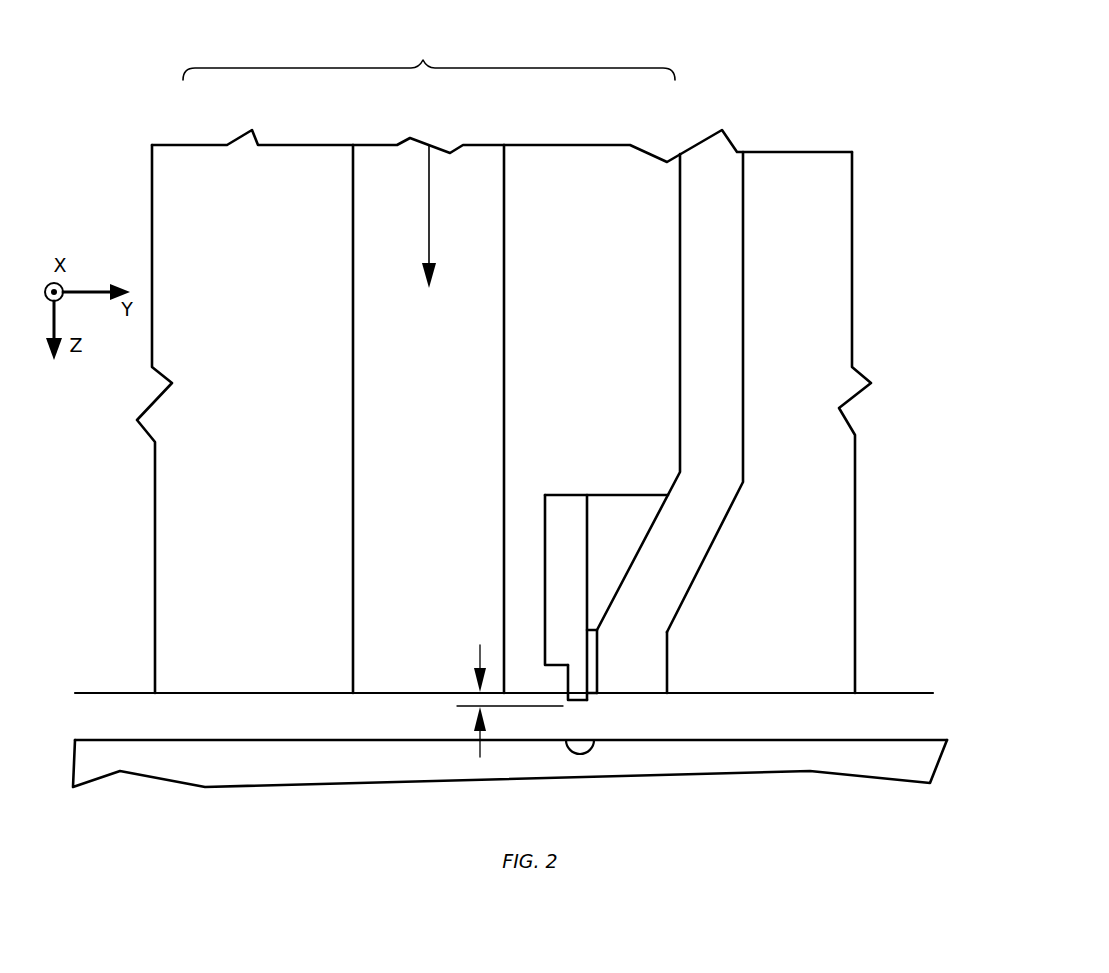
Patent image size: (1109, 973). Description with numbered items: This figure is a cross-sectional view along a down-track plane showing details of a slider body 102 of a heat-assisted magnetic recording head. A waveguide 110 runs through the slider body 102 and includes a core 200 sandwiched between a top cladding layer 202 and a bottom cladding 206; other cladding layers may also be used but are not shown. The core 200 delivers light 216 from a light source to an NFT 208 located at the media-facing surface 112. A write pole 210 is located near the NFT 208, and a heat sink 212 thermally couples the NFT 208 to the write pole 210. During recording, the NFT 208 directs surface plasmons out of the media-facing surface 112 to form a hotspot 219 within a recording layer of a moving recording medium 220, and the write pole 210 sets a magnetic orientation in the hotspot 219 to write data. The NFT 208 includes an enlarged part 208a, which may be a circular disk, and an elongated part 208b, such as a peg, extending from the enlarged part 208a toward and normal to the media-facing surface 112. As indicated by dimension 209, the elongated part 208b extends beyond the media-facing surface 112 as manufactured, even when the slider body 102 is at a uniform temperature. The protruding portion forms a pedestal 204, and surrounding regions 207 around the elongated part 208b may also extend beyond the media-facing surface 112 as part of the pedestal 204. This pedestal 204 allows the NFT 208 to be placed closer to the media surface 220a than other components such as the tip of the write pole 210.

The slider body 102 is at (138, 78).
The waveguide 110 is at (429, 57).
The media-facing surface 112 is at (892, 693).
The core 200 is at (379, 153).
The top cladding layer 202 is at (618, 153).
The pedestal 204 is at (589, 699).
The bottom cladding 206 is at (231, 153).
The regions surrounding the elongated part 207 is at (562, 700).
The NFT 208 is at (572, 462).
The enlarged part 208a is at (568, 570).
The elongated part 208b is at (583, 688).
The dimension 209 is at (510, 689).
The write pole 210 is at (655, 675).
The heat sink 212 is at (645, 513).
The light 216 is at (429, 200).
The hotspot 219 is at (578, 754).
The recording medium 220 is at (262, 787).
The media surface 220a is at (270, 740).